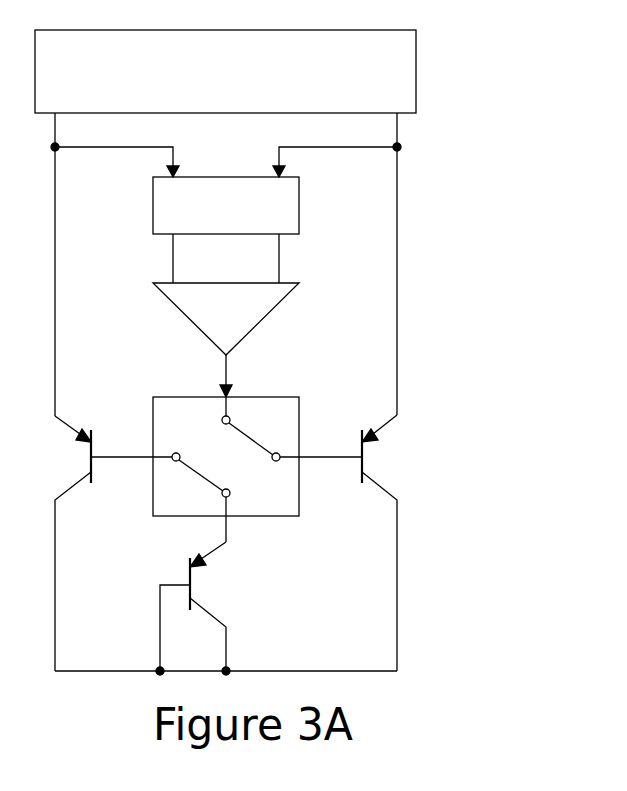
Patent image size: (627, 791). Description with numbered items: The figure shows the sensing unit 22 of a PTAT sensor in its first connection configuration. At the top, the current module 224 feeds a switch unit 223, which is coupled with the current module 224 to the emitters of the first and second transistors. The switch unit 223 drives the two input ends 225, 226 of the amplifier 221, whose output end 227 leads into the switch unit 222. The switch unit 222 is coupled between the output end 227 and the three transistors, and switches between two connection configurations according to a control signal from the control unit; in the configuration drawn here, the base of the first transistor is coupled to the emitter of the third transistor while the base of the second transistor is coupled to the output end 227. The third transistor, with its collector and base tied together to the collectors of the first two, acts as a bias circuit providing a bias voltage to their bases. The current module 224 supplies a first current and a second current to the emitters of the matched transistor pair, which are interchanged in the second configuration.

The sensing unit 22 is at (448, 600).
The current module 224 is at (418, 78).
The switch unit 223 is at (299, 205).
The input end 225 is at (173, 262).
The input end 226 is at (279, 255).
The amplifier 221 is at (273, 310).
The output end 227 is at (226, 365).
The switch unit 222 is at (280, 517).